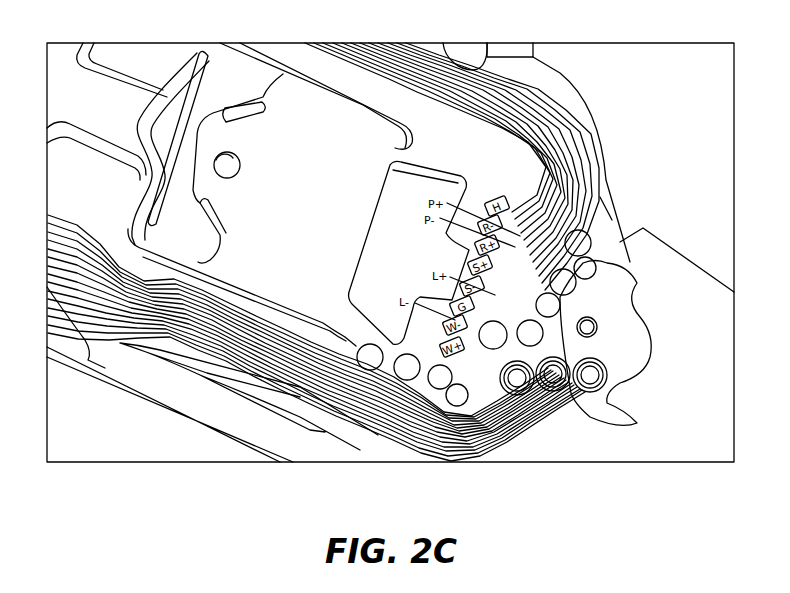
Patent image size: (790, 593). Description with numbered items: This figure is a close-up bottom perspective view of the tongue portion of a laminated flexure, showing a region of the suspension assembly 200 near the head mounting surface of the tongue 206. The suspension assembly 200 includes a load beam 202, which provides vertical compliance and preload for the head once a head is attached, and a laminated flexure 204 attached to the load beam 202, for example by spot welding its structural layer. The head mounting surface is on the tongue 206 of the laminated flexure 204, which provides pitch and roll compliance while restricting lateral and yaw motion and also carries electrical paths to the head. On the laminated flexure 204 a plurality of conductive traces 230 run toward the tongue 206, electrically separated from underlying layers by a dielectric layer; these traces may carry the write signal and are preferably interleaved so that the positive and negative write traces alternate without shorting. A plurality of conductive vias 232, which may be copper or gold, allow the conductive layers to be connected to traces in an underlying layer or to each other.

The suspension assembly 200 is at (131, 416).
The load beam 202 is at (663, 262).
The laminated flexure 204 is at (600, 197).
The tongue 206 is at (334, 216).
The conductive traces 230 is at (336, 418).
The conductive vias 232 is at (628, 426).